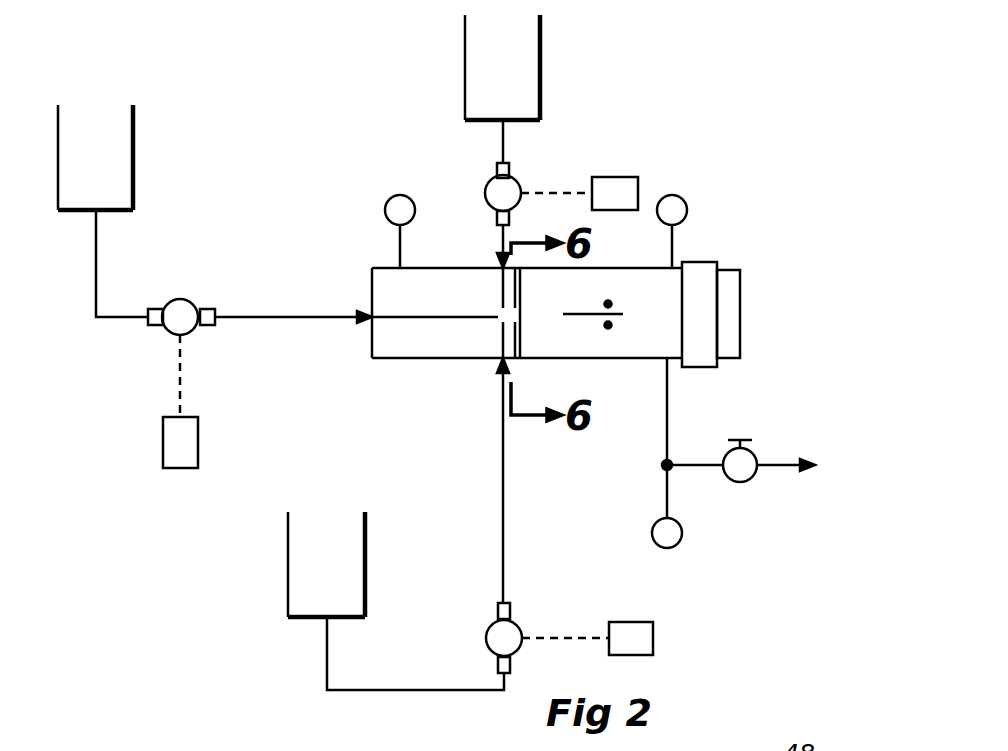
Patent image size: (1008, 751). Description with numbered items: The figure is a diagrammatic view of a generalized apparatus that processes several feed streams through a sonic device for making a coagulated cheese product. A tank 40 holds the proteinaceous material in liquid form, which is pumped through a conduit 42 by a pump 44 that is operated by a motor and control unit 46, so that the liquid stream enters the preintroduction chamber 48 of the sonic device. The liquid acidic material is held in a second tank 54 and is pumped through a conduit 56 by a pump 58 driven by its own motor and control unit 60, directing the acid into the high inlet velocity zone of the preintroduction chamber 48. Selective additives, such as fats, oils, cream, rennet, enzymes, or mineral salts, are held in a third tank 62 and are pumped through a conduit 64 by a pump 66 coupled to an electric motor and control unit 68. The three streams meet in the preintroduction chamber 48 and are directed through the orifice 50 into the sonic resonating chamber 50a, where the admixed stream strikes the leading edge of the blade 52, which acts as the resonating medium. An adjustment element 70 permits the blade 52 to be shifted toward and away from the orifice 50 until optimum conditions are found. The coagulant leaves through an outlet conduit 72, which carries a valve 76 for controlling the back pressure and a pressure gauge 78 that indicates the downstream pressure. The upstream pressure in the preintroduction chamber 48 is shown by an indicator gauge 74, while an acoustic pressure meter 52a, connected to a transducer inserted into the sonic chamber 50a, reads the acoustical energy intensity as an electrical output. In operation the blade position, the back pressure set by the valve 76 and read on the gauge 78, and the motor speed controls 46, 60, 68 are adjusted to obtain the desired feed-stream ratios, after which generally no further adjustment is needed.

The tank 40 is at (135, 147).
The conduit 42 is at (264, 314).
The pump 44 is at (181, 299).
The motor and control unit 46 is at (163, 441).
The preintroduction chamber 48 is at (418, 372).
The orifice 50 is at (521, 316).
The sonic resonating chamber 50a is at (641, 346).
The blade 52 is at (577, 313).
The acoustic pressure meter 52a is at (683, 200).
The tank 54 is at (543, 50).
The conduit 56 is at (503, 143).
The pump 58 is at (488, 183).
The motor and control unit 60 is at (618, 177).
The tank 62 is at (288, 557).
The conduit 64 is at (327, 677).
The pump 66 is at (487, 640).
The electric motor and control unit 68 is at (628, 622).
The adjustment element 70 is at (700, 367).
The outlet conduit 72 is at (667, 413).
The indicator gauge 74 is at (385, 211).
The valve 76 is at (748, 481).
The pressure gauge 78 is at (682, 537).